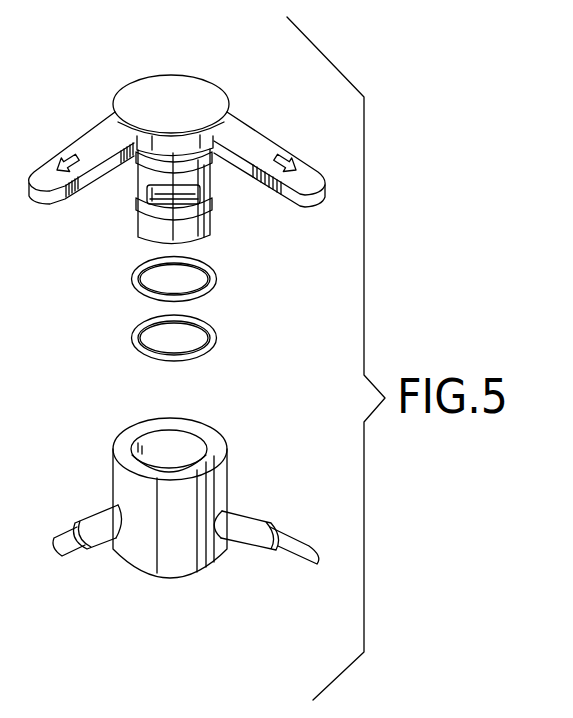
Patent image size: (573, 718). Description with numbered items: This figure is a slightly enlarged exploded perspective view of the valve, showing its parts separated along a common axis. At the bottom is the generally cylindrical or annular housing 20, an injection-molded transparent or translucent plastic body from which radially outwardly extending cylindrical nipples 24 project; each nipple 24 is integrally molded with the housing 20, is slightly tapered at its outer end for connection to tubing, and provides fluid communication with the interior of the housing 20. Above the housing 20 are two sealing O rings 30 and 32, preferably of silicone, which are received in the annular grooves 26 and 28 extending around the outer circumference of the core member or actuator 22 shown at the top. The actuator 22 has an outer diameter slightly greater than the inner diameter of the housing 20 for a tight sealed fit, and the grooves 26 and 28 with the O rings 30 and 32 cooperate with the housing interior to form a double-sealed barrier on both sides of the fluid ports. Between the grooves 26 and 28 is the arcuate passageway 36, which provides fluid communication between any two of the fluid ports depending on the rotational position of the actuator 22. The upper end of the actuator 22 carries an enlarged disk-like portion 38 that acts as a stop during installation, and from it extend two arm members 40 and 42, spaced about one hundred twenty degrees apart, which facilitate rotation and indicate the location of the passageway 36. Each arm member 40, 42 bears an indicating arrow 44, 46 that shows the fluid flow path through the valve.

The housing 20 is at (199, 428).
The core member or actuator 22 is at (209, 183).
The nipple 24 is at (115, 497).
The annular groove 26 is at (135, 172).
The annular groove 28 is at (135, 208).
The sealing O ring 30 is at (138, 272).
The sealing O ring 32 is at (140, 330).
The arcuate passageway 36 is at (202, 203).
The disk-like portion 38 is at (165, 90).
The arm member 40 is at (65, 193).
The arm member 42 is at (272, 186).
The arrow 44 is at (70, 153).
The arrow 46 is at (277, 153).